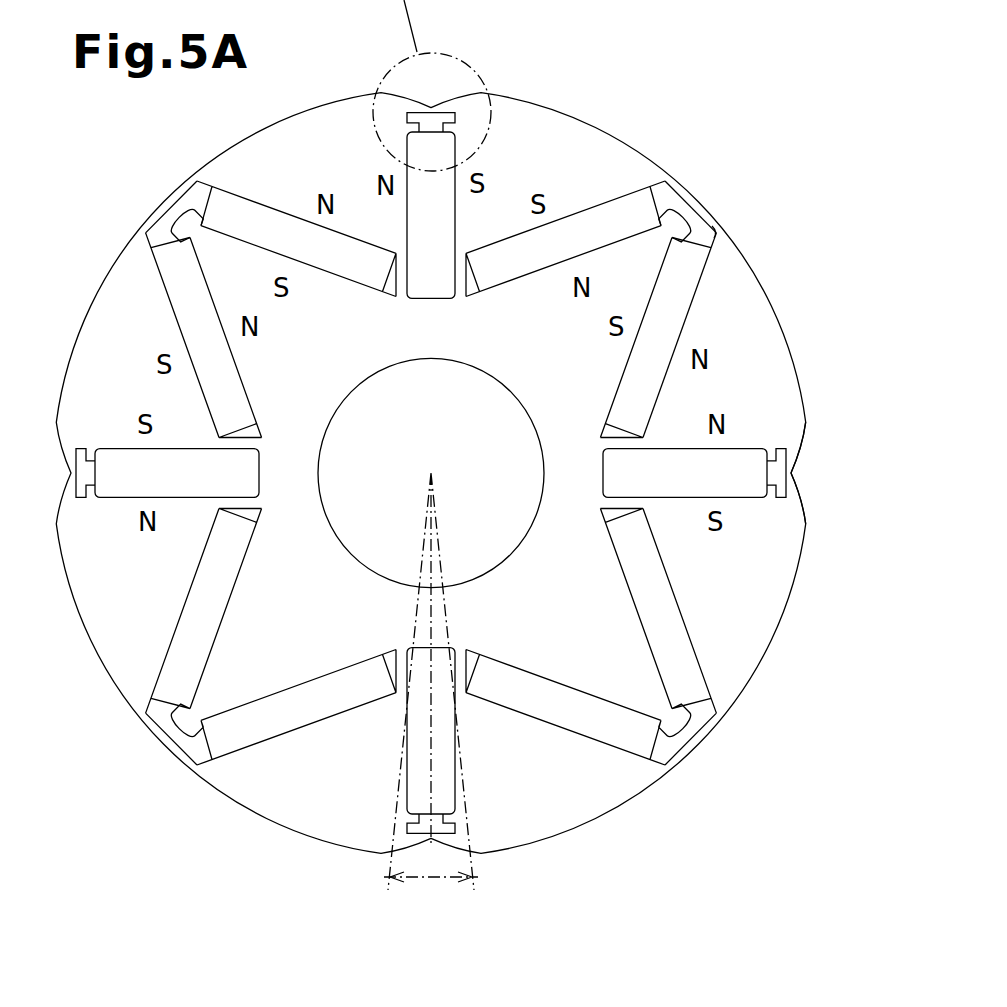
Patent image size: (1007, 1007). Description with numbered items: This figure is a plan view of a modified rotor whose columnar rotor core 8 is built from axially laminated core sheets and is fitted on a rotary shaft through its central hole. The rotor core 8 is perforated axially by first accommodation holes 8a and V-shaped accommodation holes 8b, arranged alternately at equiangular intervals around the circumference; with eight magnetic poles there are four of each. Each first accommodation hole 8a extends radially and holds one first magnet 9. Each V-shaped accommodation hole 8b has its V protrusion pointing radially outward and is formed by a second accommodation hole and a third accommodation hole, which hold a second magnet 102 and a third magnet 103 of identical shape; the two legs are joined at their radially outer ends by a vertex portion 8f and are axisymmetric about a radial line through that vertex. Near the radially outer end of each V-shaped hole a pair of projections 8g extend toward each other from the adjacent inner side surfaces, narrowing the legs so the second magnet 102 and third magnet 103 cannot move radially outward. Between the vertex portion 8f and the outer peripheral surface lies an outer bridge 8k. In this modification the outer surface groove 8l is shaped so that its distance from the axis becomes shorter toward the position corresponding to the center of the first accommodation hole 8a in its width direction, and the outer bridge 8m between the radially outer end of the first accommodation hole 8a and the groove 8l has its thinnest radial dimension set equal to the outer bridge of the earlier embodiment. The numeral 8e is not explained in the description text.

The rotor core 8 is at (563, 607).
The first magnet 9 is at (418, 147).
The first accommodation hole 8a is at (446, 150).
The V-shaped accommodation hole 8b is at (519, 263).
The magnet insertion hole side wall 8e is at (596, 213).
The vertex portion 8f is at (709, 232).
The projection 8g is at (673, 196).
The outer bridge 8k is at (699, 200).
The groove 8l is at (802, 458).
The outer bridge 8m is at (796, 481).
The second magnet 102 is at (273, 222).
The third magnet 103 is at (637, 203).